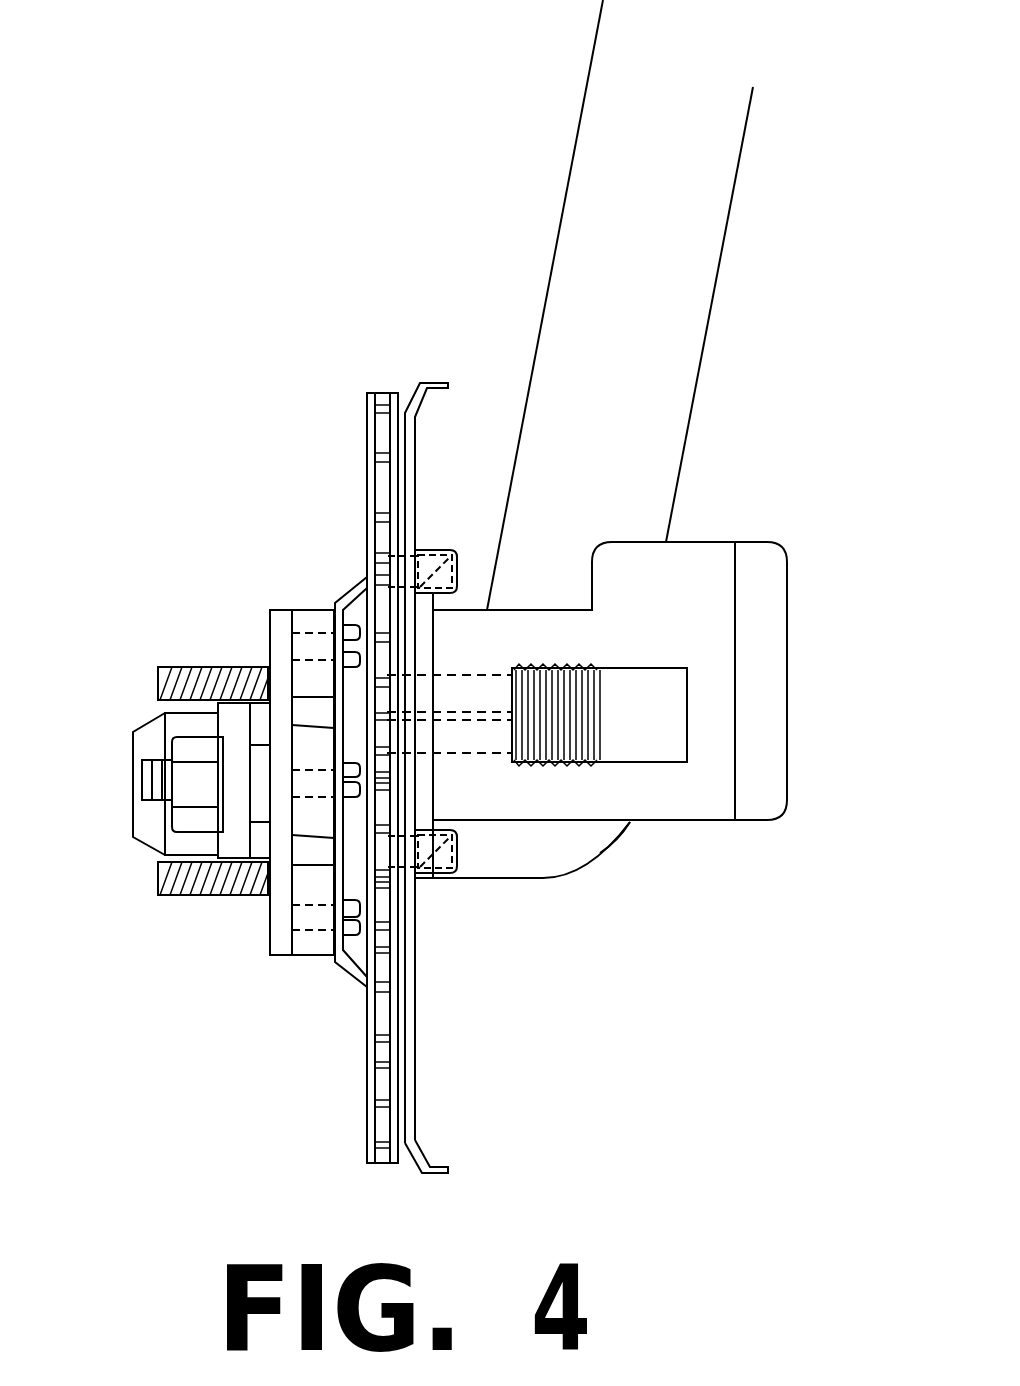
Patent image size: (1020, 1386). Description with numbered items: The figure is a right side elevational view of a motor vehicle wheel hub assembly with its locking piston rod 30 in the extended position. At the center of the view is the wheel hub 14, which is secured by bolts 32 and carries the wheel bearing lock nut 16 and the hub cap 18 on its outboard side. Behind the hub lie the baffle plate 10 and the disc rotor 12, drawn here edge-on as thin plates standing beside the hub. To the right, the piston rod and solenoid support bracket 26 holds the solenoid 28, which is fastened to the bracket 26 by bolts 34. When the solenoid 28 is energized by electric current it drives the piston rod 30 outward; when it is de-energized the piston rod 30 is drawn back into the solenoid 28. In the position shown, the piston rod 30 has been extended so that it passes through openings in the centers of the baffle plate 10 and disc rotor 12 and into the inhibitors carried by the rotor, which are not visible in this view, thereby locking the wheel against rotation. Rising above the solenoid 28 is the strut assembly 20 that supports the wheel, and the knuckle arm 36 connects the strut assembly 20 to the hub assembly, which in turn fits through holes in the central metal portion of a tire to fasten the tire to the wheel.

The baffle plate 10 is at (428, 383).
The disc rotor 12 is at (367, 1080).
The wheel hub 14 is at (270, 623).
The wheel bearing lock nut 16 is at (195, 833).
The hub cap 18 is at (133, 738).
The strut assembly 20 is at (722, 246).
The piston rod and solenoid support bracket 26 is at (427, 880).
The solenoid 28 is at (763, 688).
The piston rod 30 is at (450, 693).
The bolts 32 is at (356, 625).
The bolts 34 is at (435, 562).
The knuckle arm 36 is at (630, 823).